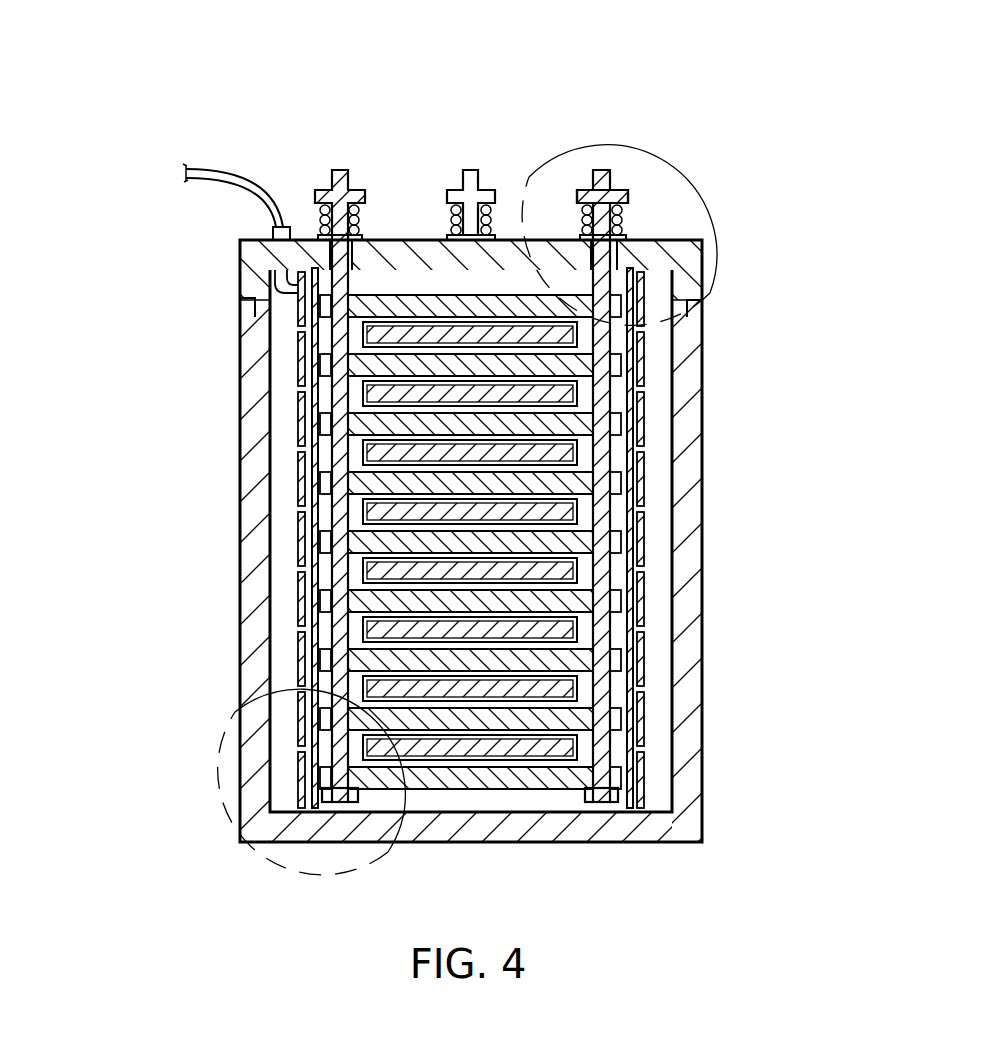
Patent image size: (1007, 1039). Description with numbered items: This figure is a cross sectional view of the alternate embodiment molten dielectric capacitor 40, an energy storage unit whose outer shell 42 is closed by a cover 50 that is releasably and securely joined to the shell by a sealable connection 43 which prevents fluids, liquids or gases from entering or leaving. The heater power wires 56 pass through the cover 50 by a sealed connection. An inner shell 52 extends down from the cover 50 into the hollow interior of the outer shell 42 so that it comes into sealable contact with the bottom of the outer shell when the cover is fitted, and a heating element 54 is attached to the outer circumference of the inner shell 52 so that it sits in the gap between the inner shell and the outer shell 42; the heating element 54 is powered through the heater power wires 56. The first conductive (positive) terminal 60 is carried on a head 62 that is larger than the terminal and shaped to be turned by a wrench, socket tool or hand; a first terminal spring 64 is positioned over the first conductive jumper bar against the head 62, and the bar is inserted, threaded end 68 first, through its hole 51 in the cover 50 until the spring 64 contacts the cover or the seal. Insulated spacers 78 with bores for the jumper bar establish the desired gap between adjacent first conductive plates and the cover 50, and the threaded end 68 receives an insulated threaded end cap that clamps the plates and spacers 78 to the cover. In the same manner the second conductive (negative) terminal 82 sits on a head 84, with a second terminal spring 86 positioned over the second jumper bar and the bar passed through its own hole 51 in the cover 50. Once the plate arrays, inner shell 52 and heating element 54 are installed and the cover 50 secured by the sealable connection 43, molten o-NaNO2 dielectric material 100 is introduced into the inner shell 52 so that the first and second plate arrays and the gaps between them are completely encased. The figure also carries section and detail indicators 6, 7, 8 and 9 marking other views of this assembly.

The molten dielectric capacitor 40 is at (194, 86).
The outer shell 42 is at (240, 637).
The sealable connection 43 is at (240, 300).
The cover 50 is at (240, 266).
The hole 51 is at (363, 242).
The inner shell 52 is at (629, 805).
The heating element 54 is at (643, 668).
The heater power wires 56 is at (185, 172).
The first conductive terminal 60 is at (337, 170).
The head 62 is at (628, 192).
The first terminal spring 64 is at (622, 218).
The threaded end 68 is at (595, 805).
The insulated spacers 78 is at (615, 748).
The second conductive terminal 82 is at (470, 170).
The head 84 is at (520, 325).
The second terminal spring 86 is at (446, 218).
The molten o-NaNO2 dielectric material 100 is at (520, 805).
The detail region of FIG. 6 is at (700, 190).
The detail region of FIG. 7 is at (207, 882).
The section line 8- 8 is at (228, 367).
The section line 9- 9 is at (228, 512).